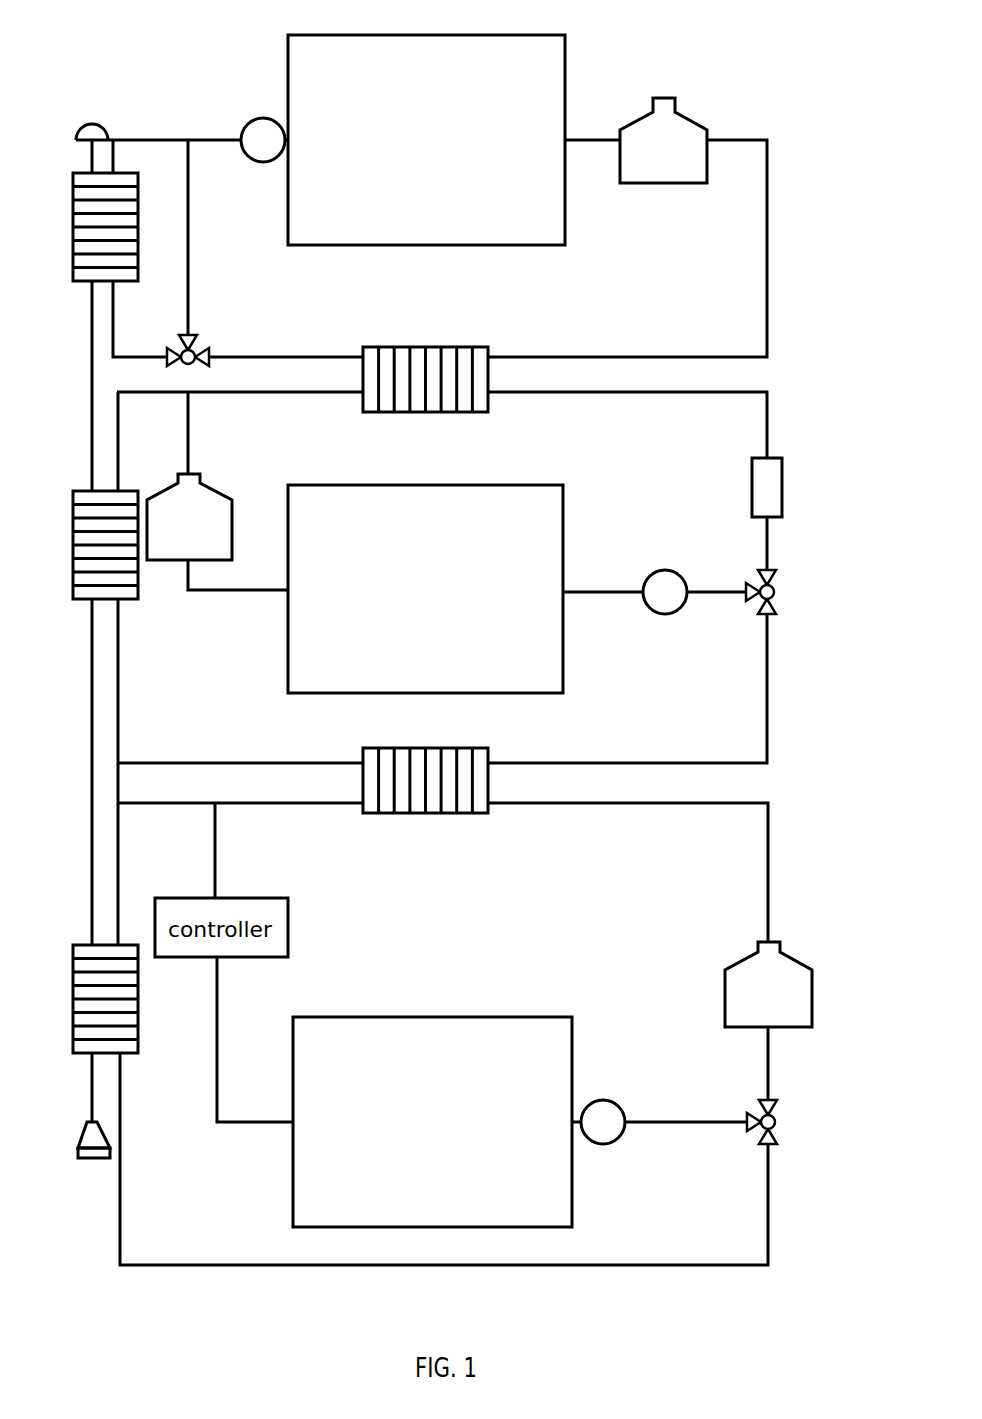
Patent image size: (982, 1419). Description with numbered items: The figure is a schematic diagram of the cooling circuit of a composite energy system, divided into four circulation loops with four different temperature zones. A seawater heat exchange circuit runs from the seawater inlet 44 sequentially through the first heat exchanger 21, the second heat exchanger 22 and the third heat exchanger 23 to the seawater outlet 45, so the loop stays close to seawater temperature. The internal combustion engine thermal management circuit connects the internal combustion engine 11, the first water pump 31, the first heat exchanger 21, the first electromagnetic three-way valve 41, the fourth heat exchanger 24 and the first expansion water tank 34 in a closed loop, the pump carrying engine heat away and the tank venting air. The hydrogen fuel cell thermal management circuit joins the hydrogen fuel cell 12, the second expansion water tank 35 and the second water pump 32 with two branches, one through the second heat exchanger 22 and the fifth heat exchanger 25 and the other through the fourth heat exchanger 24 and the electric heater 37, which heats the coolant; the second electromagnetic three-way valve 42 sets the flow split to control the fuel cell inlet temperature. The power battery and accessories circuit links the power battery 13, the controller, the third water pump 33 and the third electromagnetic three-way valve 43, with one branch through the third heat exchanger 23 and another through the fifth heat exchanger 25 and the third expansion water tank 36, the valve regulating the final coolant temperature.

The internal combustion engine 11 is at (426, 125).
The hydrogen fuel cell 12 is at (425, 577).
The power battery 13 is at (432, 1108).
The first heat exchanger 21 is at (95, 245).
The second heat exchanger 22 is at (96, 561).
The third heat exchanger 23 is at (95, 1016).
The fourth heat exchanger 24 is at (425, 366).
The fifth heat exchanger 25 is at (425, 767).
The first water pump 31 is at (263, 156).
The second water pump 32 is at (665, 610).
The third water pump 33 is at (603, 1137).
The first expansion water tank 34 is at (663, 155).
The second expansion water tank 35 is at (207, 517).
The third expansion water tank 36 is at (752, 984).
The electric heater 37 is at (740, 487).
The first electromagnetic three-way valve 41 is at (203, 343).
The second electromagnetic three-way valve 42 is at (782, 592).
The third electromagnetic three-way valve 43 is at (782, 1122).
The seawater inlet 44 is at (91, 120).
The seawater outlet 45 is at (94, 1158).